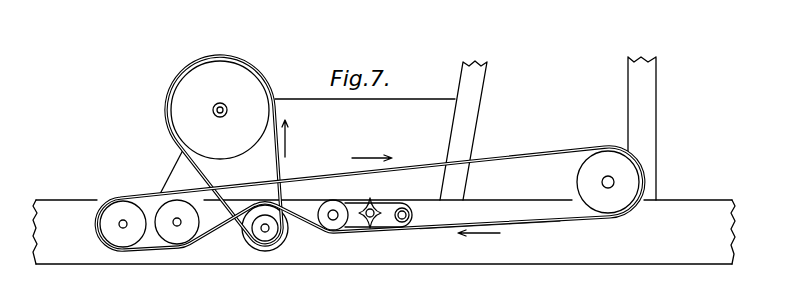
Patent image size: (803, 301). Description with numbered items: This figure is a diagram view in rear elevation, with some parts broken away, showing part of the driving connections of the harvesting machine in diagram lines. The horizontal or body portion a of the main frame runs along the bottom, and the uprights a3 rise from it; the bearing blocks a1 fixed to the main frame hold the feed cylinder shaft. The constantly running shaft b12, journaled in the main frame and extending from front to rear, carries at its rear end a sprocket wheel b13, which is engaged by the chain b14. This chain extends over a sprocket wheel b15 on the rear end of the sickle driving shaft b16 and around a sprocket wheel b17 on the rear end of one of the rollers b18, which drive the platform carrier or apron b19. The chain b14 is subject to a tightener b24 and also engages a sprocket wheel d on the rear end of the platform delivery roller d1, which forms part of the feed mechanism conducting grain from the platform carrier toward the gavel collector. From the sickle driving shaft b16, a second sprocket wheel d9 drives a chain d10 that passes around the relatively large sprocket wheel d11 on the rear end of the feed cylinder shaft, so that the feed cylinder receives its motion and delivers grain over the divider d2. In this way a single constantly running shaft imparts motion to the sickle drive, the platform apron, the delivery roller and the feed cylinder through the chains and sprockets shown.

The horizontal or body portion of main frame a is at (69, 208).
The bearing blocks a1 is at (416, 94).
The uprights a3 is at (474, 97).
The sprocket wheel d is at (178, 239).
The platform delivery roller d1 is at (181, 222).
The divider d2 is at (227, 110).
The sprocket wheel d9 is at (270, 232).
The chain d10 is at (278, 168).
The relatively large sprocket wheel d11 is at (220, 110).
The shaft b12 is at (615, 182).
The sprocket wheel b13 is at (583, 182).
The chain b14 is at (333, 181).
The sprocket wheel b15 is at (273, 251).
The sickle driving shaft b16 is at (263, 238).
The sprocket wheel b17 is at (118, 235).
The rollers b18 is at (124, 220).
The platform carrier or apron b19 is at (490, 235).
The tightener b24 is at (357, 207).